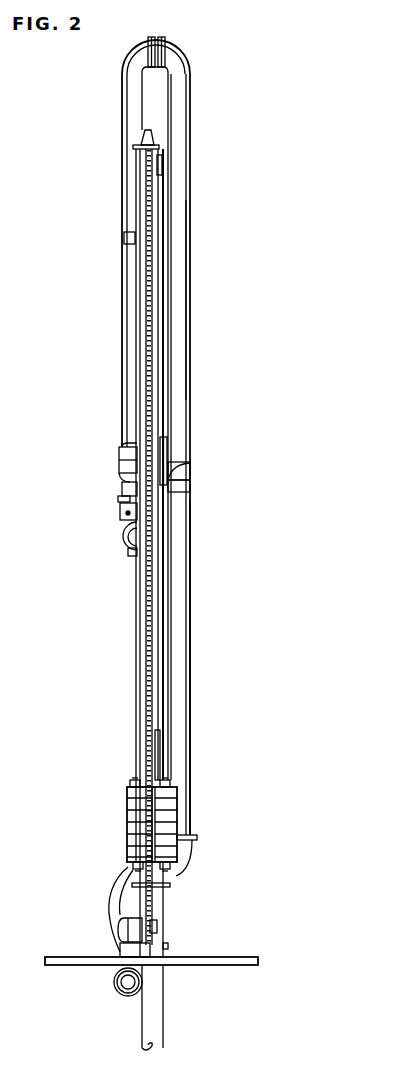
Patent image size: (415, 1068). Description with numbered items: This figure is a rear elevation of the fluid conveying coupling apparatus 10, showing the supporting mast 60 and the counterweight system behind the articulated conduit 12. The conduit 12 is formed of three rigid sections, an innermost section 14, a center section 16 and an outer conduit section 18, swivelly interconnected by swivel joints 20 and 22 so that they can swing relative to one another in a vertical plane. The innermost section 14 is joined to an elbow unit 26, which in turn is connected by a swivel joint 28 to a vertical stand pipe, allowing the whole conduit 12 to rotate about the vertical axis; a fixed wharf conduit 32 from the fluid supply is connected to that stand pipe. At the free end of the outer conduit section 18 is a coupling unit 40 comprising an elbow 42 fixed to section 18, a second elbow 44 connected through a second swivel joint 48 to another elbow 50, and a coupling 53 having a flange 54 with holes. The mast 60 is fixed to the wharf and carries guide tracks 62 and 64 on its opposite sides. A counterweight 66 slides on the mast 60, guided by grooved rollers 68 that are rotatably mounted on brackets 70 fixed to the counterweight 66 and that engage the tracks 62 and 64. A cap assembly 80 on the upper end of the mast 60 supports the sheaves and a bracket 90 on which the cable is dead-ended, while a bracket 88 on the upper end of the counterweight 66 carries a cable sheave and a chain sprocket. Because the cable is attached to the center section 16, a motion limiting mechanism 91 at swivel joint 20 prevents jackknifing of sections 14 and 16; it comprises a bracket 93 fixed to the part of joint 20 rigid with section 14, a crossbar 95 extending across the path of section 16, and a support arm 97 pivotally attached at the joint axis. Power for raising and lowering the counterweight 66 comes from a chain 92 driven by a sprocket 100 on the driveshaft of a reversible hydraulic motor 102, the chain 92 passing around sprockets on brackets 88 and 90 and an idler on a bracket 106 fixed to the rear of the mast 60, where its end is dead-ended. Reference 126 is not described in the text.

The coupling apparatus 10 is at (210, 125).
The articulated conduit 12 is at (193, 373).
The innermost section 14 is at (180, 586).
The center section 16 is at (123, 297).
The outer conduit section 18 is at (180, 292).
The swivel joint 20 is at (190, 486).
The swivel joint 22 is at (164, 57).
The elbow unit 26 is at (112, 890).
The swivel joint 28 is at (169, 946).
The fixed wharf conduit 32 is at (114, 982).
The coupling unit 40 is at (118, 546).
The elbow 42 is at (186, 470).
The second elbow 44 is at (128, 487).
The second swivel joint 48 is at (125, 499).
The elbow 50 is at (130, 514).
The coupling 53 is at (124, 516).
The flange 54 is at (134, 553).
The supporting mast 60 is at (140, 163).
The guide track 62 is at (136, 263).
The guide track 64 is at (160, 263).
The counterweight 66 is at (127, 794).
The grooved rollers 68 is at (133, 779).
The brackets 70 is at (136, 780).
The cap assembly 80 is at (144, 137).
The bracket 88 is at (160, 735).
The bracket 90 is at (160, 165).
The motion limiting mechanism 91 is at (118, 445).
The chain 92 is at (149, 245).
The bracket 93 is at (166, 445).
The crossbar 95 is at (132, 445).
The support arm 97 is at (119, 457).
The sprocket 100 is at (158, 927).
The reversible hydraulic motor 102 is at (120, 928).
The bracket 106 is at (170, 886).
The inner tube extension 126 is at (150, 92).